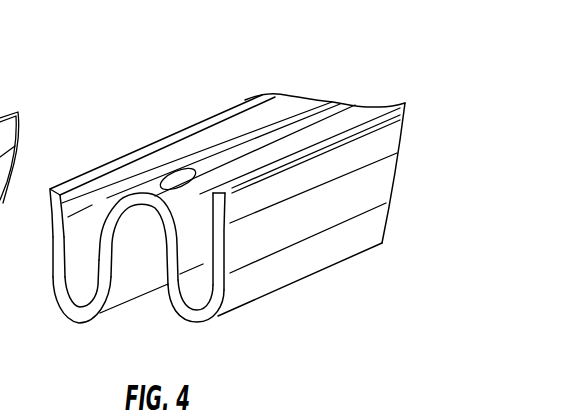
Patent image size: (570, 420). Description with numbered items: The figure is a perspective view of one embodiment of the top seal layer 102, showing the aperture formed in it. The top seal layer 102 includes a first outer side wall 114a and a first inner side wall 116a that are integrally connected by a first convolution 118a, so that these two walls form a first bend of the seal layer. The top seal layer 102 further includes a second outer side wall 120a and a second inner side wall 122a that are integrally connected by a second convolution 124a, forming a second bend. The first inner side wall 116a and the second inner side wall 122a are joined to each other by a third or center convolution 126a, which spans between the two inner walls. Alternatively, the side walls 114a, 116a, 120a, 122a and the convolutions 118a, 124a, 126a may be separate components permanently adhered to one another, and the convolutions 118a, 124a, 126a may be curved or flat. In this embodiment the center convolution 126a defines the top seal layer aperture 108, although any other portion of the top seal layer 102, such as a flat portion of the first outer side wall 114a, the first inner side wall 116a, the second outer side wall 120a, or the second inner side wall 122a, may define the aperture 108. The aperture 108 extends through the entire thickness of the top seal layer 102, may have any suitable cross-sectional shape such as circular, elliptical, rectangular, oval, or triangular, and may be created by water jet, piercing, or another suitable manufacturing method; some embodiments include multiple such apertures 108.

The top seal layer 102 is at (226, 60).
The top seal layer aperture 108 is at (178, 172).
The first outer side wall 114a is at (49, 207).
The first inner side wall 116a is at (93, 222).
The first convolution 118a is at (73, 325).
The second outer side wall 120a is at (222, 242).
The second inner side wall 122a is at (173, 287).
The second convolution 124a is at (180, 320).
The center convolution 126a is at (233, 153).